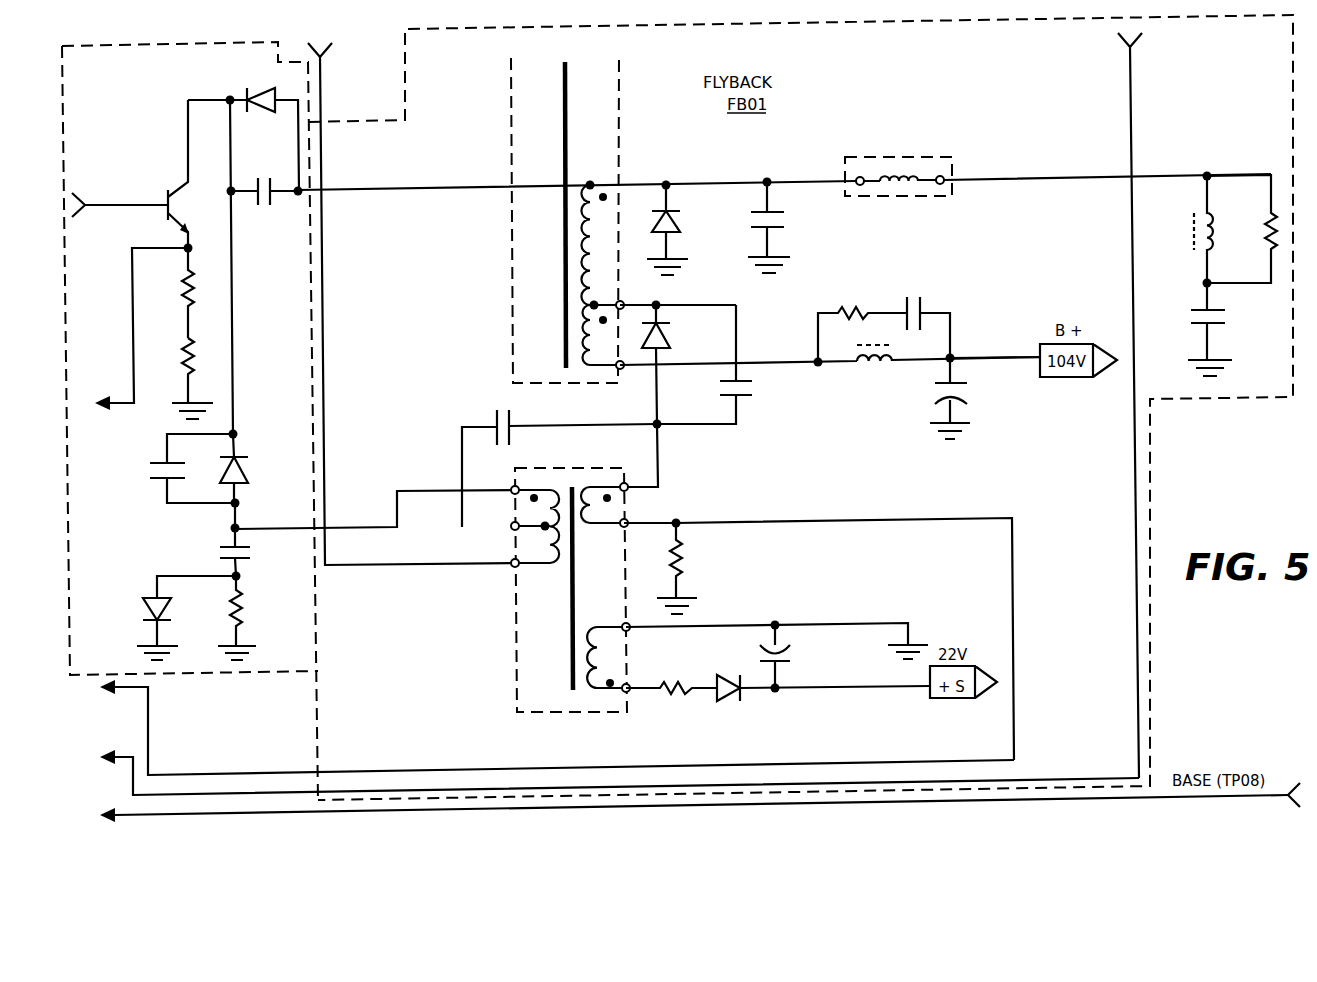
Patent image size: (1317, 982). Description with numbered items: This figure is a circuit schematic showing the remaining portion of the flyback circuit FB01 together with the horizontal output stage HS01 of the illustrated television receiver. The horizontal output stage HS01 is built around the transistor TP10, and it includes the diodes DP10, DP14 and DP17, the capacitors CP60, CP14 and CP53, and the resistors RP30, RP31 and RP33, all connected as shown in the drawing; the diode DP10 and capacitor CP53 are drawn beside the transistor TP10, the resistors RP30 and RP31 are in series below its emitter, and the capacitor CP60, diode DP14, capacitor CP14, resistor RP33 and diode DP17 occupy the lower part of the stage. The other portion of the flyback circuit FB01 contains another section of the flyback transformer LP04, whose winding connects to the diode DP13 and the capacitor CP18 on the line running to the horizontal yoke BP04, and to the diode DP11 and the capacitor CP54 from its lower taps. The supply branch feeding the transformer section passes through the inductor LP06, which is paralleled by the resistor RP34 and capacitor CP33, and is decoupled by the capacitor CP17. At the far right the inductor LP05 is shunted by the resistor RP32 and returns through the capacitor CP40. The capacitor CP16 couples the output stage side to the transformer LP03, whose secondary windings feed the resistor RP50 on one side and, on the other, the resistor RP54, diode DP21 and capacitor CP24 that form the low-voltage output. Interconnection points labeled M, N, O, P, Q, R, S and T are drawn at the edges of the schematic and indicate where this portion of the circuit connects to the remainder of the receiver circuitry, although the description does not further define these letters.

The horizontal output stage HS01 is at (235, 77).
The flyback circuit FB01 is at (801, 407).
The transistor TP10 is at (150, 176).
The diode DP10 is at (243, 139).
The capacitor CP53 is at (265, 267).
The resistor RP30 is at (167, 293).
The resistor RP31 is at (177, 378).
The capacitor CP60 is at (170, 468).
The diode DP14 is at (259, 469).
The capacitor CP14 is at (341, 535).
The resistor RP33 is at (257, 618).
The diode DP17 is at (186, 618).
The flyback transformer LP04 is at (575, 213).
The diode DP13 is at (692, 228).
The diode DP11 is at (678, 365).
The capacitor CP54 is at (727, 371).
The capacitor CP16 is at (553, 441).
The capacitor CP18 is at (790, 226).
The horizontal yoke BP04 is at (898, 177).
The resistor RP34 is at (884, 317).
The capacitor CP33 is at (912, 292).
The inductor LP06 is at (830, 380).
The capacitor CP17 is at (975, 398).
The inductor LP05 is at (1180, 230).
The resistor RP32 is at (1242, 229).
The capacitor CP40 is at (1189, 329).
The transformer LP03 is at (575, 568).
The resistor RP50 is at (819, 639).
The capacitor CP24 is at (777, 657).
The resistor RP54 is at (671, 711).
The diode DP21 is at (820, 710).
The terminal M (base drive input) M is at (86, 212).
The terminal N is at (103, 400).
The terminal O is at (118, 695).
The terminal P is at (114, 752).
The terminal Q is at (113, 811).
The terminal R is at (326, 50).
The terminal S is at (1126, 49).
The terminal T (base TP08) T is at (1288, 790).